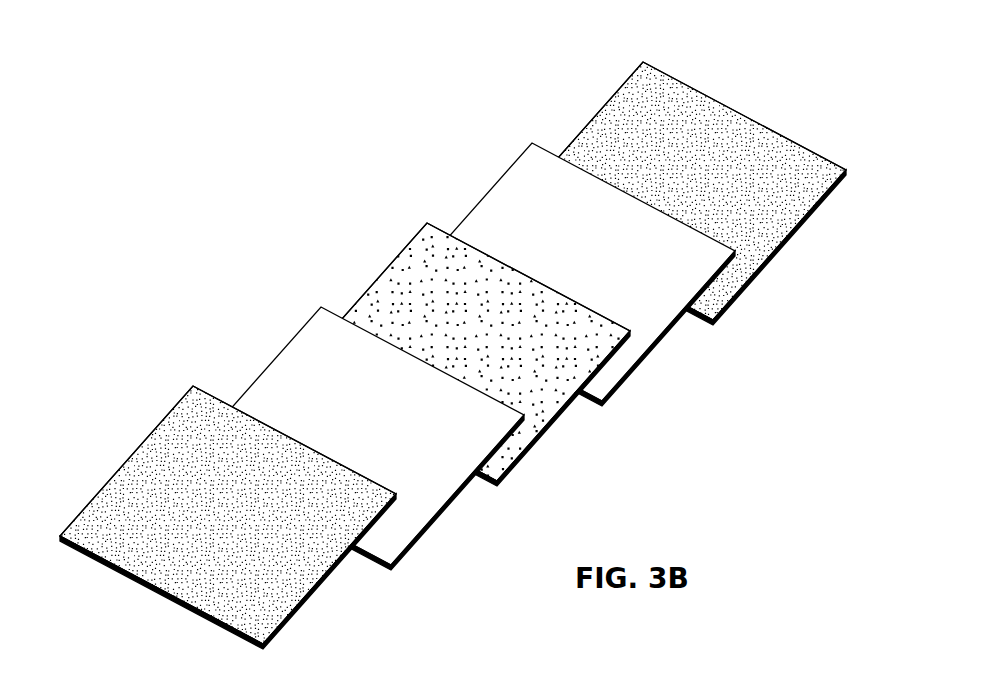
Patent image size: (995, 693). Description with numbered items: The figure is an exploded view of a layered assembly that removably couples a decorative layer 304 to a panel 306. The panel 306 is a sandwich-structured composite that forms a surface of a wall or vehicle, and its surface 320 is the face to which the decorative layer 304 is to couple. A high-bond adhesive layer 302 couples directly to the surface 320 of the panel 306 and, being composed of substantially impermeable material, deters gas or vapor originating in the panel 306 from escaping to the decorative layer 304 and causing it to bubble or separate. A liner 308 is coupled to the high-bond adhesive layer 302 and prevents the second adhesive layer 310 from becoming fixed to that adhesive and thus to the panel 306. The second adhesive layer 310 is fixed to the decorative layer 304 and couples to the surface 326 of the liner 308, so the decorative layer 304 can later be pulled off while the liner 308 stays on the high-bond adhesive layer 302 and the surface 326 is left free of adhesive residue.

The high-bond adhesive layer 302 is at (488, 203).
The decorative layer 304 is at (118, 492).
The panel 306 is at (600, 133).
The liner 308 is at (382, 298).
The second adhesive layer 310 is at (265, 385).
The surface of the panel 320 is at (787, 213).
The surface of the liner 326 is at (545, 407).